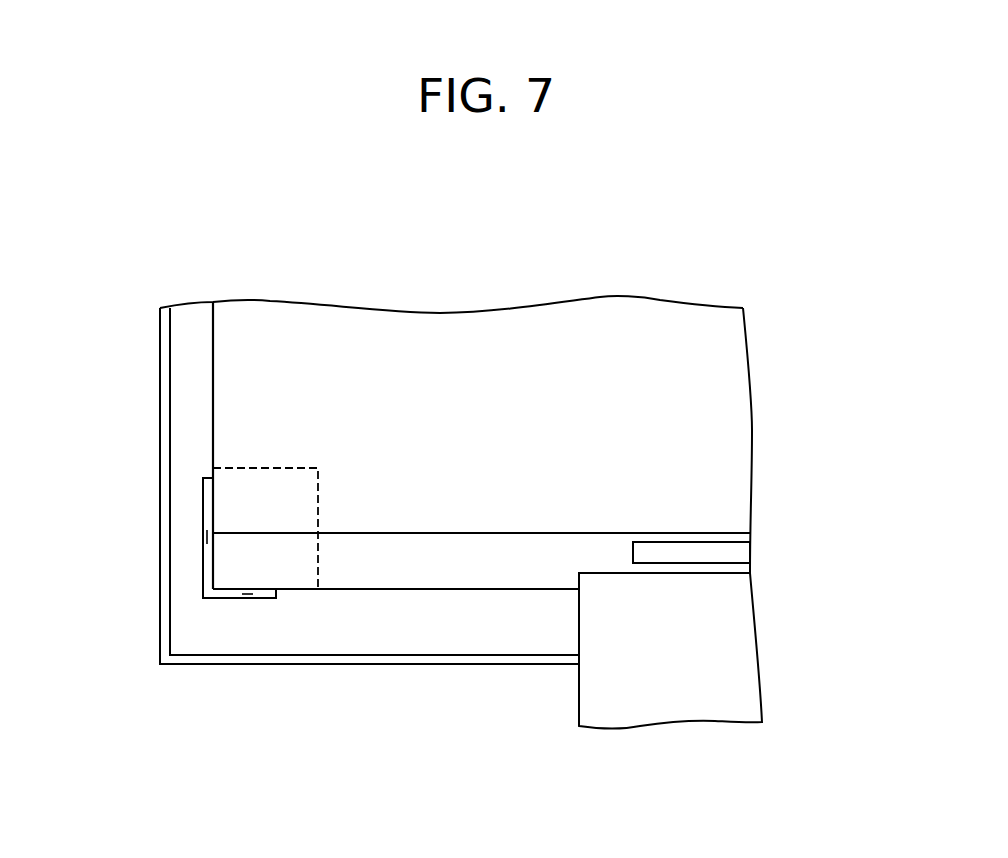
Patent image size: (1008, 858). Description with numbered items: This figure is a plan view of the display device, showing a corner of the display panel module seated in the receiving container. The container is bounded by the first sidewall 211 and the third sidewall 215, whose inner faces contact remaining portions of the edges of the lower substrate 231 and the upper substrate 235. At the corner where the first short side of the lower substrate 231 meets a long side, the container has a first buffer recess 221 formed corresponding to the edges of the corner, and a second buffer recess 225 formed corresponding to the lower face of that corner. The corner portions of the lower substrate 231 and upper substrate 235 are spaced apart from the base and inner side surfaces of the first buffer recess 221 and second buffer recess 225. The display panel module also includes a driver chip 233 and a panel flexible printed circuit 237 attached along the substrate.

The first sidewall 211 is at (395, 635).
The third sidewall 215 is at (183, 490).
The first buffer recess 221 is at (247, 594).
The second buffer recess 225 is at (255, 467).
The lower substrate 231 is at (497, 570).
The driver chip 233 is at (733, 556).
The upper substrate 235 is at (733, 480).
The panel flexible printed circuit 237 is at (733, 638).